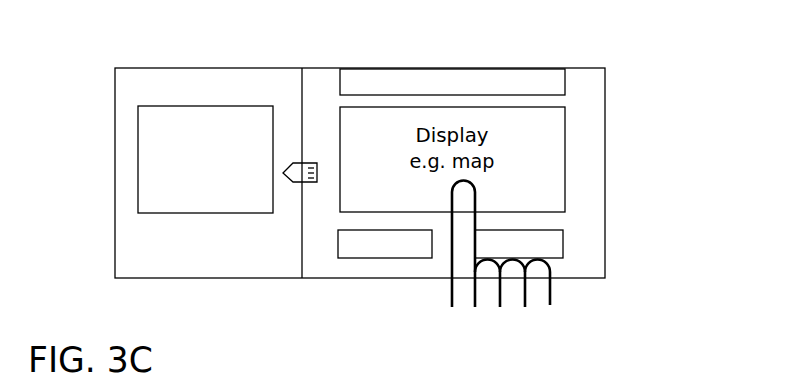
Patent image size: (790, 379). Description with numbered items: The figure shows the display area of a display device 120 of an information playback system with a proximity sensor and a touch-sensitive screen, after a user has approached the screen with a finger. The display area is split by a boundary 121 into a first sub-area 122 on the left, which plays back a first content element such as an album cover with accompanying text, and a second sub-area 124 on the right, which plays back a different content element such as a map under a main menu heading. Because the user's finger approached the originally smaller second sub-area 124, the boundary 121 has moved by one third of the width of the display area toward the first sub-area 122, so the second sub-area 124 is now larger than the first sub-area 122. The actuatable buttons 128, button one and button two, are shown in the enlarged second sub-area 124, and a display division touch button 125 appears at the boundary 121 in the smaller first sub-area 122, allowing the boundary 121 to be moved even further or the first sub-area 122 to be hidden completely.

The display device 120 is at (604, 162).
The boundary 121 is at (302, 234).
The first sub-area 122 is at (182, 95).
The second sub-area 124 is at (575, 81).
The display division touch button 125 is at (294, 172).
The actuatable buttons 128 is at (380, 258).